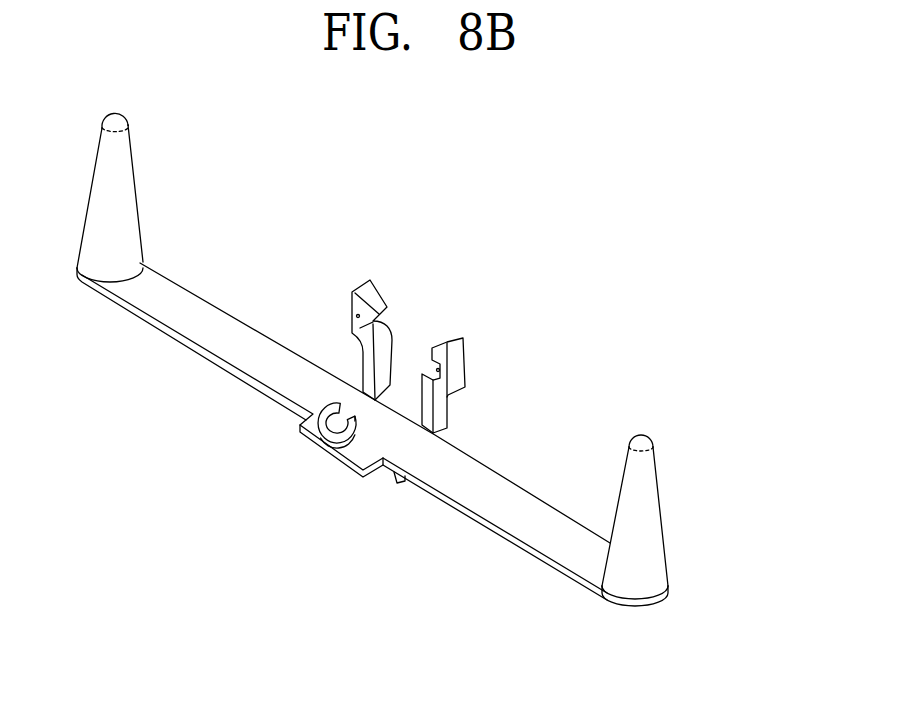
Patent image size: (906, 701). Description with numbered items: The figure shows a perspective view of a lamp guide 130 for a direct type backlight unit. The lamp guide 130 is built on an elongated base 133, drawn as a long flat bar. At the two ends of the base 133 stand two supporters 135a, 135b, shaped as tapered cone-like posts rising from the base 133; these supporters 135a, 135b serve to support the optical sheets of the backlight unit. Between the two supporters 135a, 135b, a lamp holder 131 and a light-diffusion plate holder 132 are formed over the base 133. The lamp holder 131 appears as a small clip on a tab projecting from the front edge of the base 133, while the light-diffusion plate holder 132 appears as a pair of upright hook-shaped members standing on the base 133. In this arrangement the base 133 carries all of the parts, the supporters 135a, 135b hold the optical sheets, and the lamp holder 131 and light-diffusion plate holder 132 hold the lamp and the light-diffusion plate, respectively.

The lamp guide 130 is at (483, 264).
The lamp holder 131 is at (322, 447).
The light-diffusion plate holder 132 is at (463, 358).
The base 133 is at (495, 515).
The supporter 135a is at (125, 190).
The supporter 135b is at (655, 510).